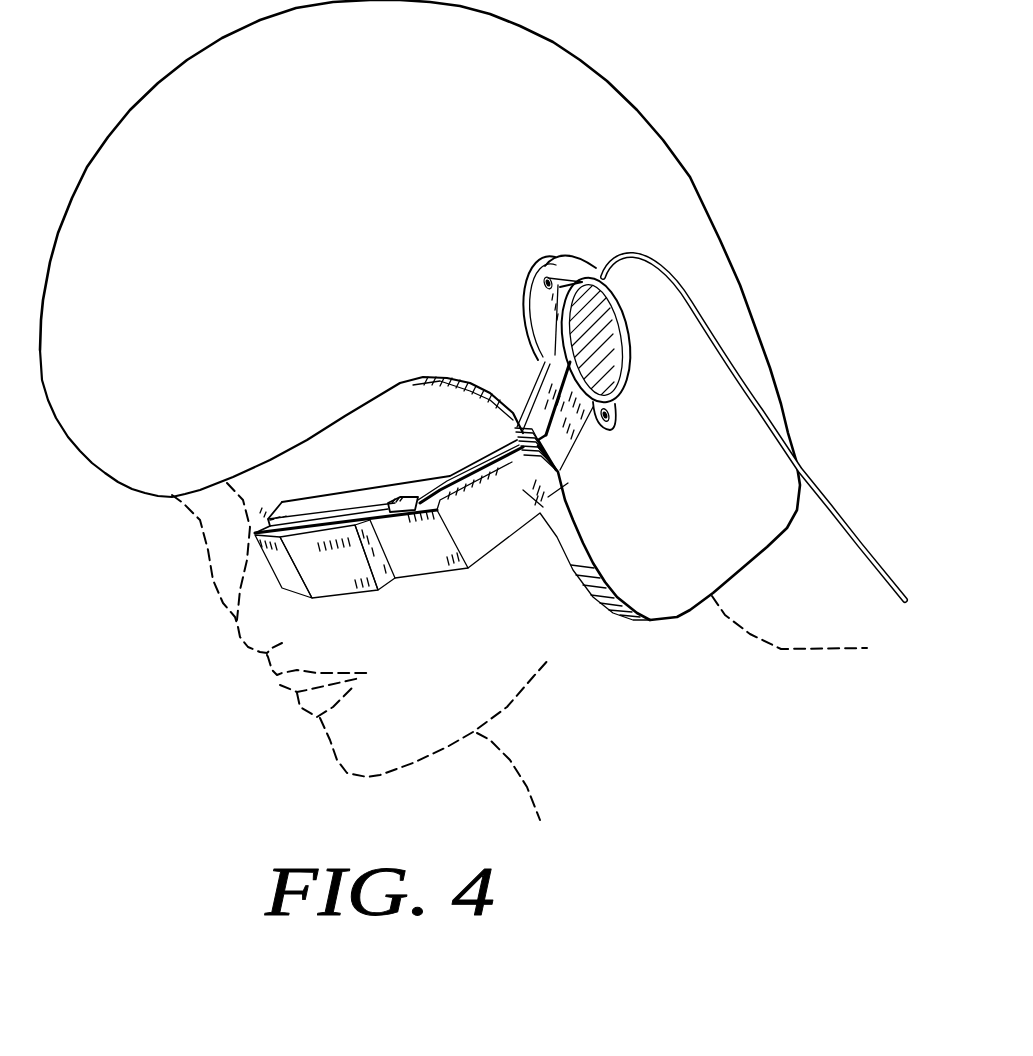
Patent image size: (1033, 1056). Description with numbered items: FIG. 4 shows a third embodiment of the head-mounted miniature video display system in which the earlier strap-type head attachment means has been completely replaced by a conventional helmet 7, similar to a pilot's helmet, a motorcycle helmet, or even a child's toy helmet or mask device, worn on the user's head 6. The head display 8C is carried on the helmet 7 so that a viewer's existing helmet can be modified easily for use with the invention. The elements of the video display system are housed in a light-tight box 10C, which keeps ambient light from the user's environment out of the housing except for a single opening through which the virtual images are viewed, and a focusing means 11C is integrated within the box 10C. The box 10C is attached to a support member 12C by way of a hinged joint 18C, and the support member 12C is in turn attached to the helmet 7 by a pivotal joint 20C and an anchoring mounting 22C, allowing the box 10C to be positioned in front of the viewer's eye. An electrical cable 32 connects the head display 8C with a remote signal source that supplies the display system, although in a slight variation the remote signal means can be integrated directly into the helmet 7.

The user's head 6 is at (188, 573).
The helmet 7 is at (588, 88).
The head display 8C is at (508, 313).
The box 10C is at (416, 553).
The focusing means 11C is at (397, 494).
The support member 12C is at (568, 427).
The hinged joint 18C is at (560, 467).
The pivotal joint 20C is at (600, 273).
The anchoring mounting 22C is at (567, 267).
The electrical cable 32 is at (836, 526).